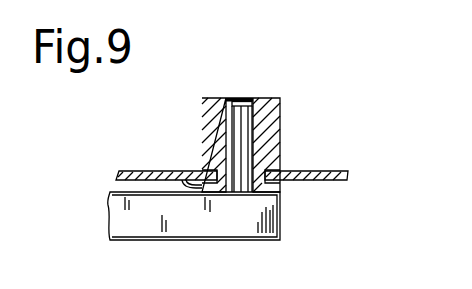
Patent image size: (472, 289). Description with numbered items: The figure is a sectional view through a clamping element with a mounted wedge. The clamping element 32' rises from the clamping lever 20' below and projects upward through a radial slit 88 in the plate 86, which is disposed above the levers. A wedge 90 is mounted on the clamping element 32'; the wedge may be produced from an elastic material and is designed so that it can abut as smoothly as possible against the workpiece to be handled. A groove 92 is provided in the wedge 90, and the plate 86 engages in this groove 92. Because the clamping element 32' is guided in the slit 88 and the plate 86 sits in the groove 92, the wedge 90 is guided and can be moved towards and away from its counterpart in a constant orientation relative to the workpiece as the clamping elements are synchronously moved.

The clamping lever 20' is at (232, 216).
The clamping element 32' is at (244, 109).
The plate 86 is at (131, 170).
The radial slit 88 is at (182, 171).
The wedge 90 is at (270, 117).
The groove 92 is at (281, 171).